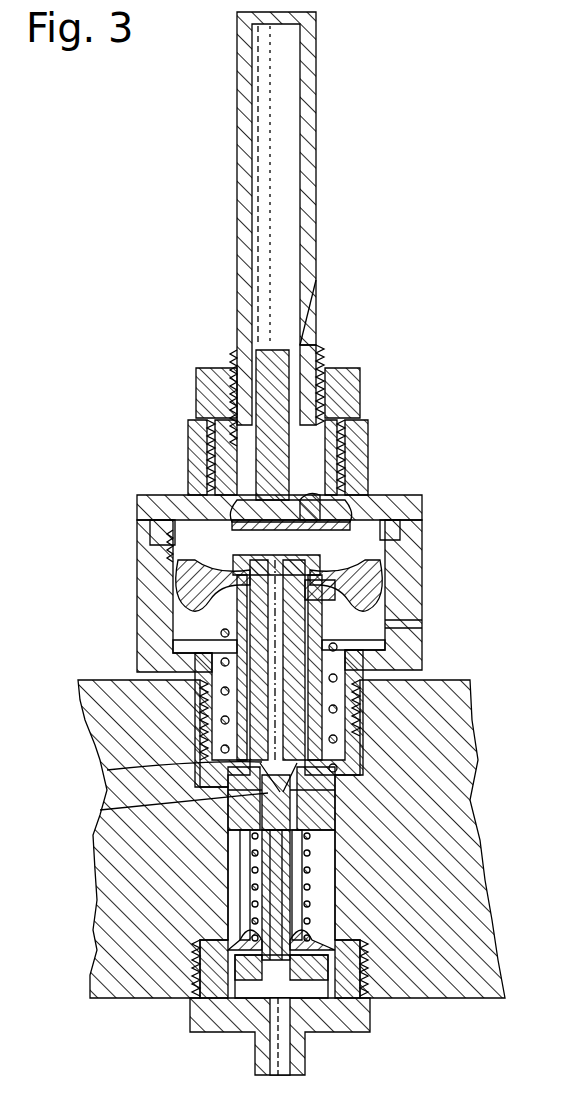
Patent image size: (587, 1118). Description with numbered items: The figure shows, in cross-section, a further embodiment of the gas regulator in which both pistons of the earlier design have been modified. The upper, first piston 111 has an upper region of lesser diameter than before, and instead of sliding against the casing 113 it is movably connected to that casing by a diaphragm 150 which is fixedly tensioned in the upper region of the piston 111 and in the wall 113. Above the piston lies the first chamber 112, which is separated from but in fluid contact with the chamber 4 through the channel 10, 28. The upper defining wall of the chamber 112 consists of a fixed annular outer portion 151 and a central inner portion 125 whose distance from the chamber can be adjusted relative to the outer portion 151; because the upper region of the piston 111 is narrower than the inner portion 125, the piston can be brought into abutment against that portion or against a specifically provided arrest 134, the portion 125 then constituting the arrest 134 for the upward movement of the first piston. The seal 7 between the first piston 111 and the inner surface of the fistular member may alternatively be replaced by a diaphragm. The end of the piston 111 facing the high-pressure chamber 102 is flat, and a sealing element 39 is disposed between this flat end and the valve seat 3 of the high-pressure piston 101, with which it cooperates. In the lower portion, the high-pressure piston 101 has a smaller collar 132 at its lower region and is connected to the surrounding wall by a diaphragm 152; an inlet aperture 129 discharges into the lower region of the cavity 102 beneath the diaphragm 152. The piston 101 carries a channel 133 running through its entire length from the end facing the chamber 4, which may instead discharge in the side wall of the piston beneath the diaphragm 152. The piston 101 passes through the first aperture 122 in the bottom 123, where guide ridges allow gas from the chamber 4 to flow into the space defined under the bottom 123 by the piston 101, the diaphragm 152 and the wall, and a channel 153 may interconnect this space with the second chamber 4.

The valve seat 3 is at (106, 788).
The second chamber 4 is at (330, 752).
The seal 7 is at (350, 700).
The channel 10 is at (292, 637).
The channel 28 is at (340, 732).
The sealing element 39 is at (355, 803).
The high-pressure piston 101 is at (335, 835).
The high-pressure chamber 102 is at (325, 858).
The piston 111 is at (230, 640).
The first chamber 112 is at (183, 545).
The casing 113 is at (143, 580).
The first aperture 122 is at (335, 782).
The bottom 123 is at (107, 770).
The central inner portion 125 is at (345, 490).
The inlet aperture 129 is at (290, 1060).
The collar 132 is at (322, 966).
The channel 133 is at (283, 902).
The arrest 134 is at (258, 520).
The diaphragm 150 is at (372, 600).
The fixed annular outer portion 151 is at (378, 523).
The diaphragm 152 is at (335, 930).
The channel 153 is at (100, 810).